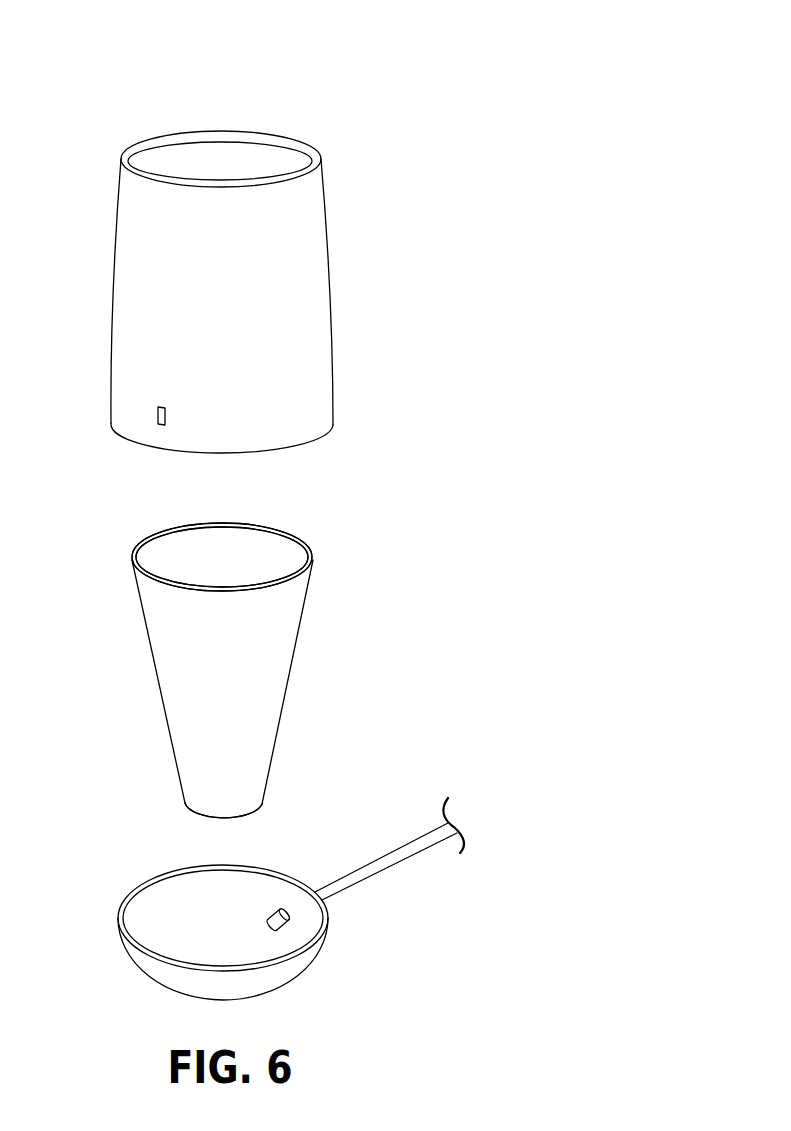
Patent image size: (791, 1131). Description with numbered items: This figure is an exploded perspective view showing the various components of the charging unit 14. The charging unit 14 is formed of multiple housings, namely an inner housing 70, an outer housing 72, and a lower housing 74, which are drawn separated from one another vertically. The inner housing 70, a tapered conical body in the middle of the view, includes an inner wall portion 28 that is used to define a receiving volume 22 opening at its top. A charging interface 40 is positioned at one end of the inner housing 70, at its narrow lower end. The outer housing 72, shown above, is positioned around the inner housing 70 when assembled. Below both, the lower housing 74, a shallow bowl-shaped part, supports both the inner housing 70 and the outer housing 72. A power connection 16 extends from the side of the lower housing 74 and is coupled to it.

The charging unit 14 is at (120, 60).
The power connection 16 is at (358, 868).
The receiving volume 22 is at (235, 562).
The inner wall portion 28 is at (165, 555).
The charging interface 40 is at (182, 805).
The inner housing 70 is at (160, 698).
The outer housing 72 is at (112, 270).
The lower housing 74 is at (118, 920).